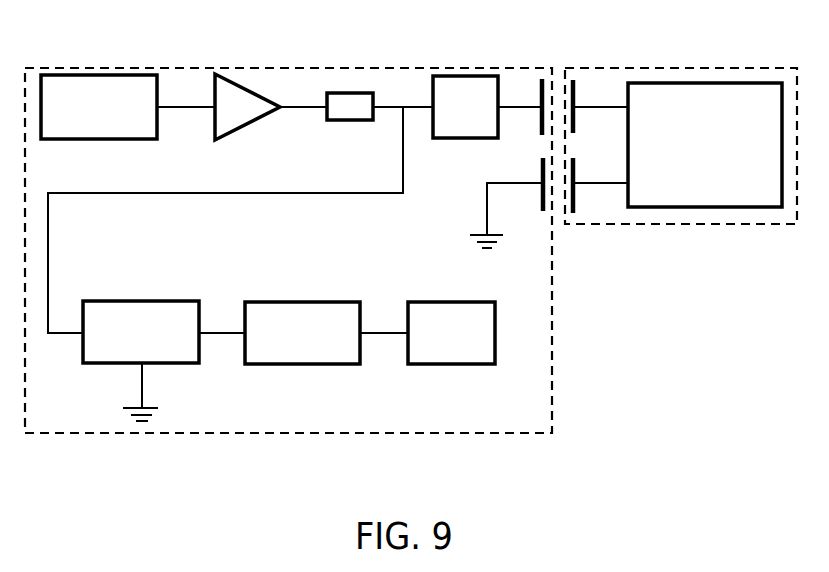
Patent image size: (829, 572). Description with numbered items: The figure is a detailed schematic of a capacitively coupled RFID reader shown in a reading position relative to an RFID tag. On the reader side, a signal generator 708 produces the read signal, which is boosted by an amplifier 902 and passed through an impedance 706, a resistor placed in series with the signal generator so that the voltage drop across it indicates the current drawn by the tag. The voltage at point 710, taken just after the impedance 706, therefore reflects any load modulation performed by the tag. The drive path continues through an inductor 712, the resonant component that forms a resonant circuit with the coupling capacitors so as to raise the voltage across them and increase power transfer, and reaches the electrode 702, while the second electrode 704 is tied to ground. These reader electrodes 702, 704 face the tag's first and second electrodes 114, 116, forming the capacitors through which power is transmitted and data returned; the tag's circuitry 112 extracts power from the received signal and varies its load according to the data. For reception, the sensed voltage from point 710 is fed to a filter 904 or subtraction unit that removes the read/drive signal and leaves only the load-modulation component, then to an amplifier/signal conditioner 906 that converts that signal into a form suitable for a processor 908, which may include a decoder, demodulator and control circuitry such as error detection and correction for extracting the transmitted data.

The signal generator 708 is at (103, 75).
The amplifier 902 is at (217, 74).
The impedance 706 is at (337, 93).
The point 710 is at (403, 107).
The inductor 712 is at (466, 76).
The electrode 702 is at (541, 79).
The electrode 704 is at (543, 213).
The first electrode 114 is at (577, 70).
The second electrode 116 is at (575, 222).
The circuitry 112 is at (703, 208).
The filter 904 is at (182, 365).
The amplifier/signal conditioner 906 is at (307, 365).
The processor 908 is at (452, 365).